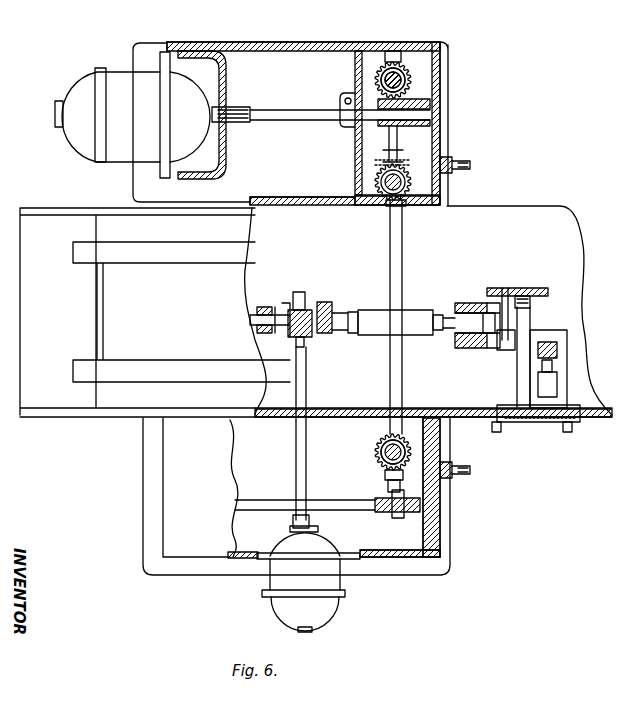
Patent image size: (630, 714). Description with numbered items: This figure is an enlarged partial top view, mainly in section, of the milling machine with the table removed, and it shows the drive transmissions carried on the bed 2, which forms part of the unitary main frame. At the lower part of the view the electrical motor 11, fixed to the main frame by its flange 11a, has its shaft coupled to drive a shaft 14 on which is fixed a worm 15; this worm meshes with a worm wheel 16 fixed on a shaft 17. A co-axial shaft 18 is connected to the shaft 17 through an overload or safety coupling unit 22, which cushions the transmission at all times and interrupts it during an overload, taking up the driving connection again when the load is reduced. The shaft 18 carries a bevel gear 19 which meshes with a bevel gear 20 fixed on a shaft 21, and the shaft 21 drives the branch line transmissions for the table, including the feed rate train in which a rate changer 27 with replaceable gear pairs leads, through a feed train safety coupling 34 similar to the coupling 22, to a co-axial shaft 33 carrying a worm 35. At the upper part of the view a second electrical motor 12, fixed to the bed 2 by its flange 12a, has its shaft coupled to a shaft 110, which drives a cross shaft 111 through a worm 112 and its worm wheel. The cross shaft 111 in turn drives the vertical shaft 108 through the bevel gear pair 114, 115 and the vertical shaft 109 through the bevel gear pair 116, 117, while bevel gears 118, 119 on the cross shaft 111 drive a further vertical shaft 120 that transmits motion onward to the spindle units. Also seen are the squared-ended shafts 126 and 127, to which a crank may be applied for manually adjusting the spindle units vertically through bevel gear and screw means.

The bed 2 is at (512, 232).
The motor 11 is at (320, 583).
The flange 11a is at (255, 562).
The motor 12 is at (70, 135).
The flange 12a is at (163, 175).
The shaft 14 is at (298, 408).
The worm 15 is at (308, 328).
The worm wheel 16 is at (306, 302).
The shaft 17 is at (266, 305).
The co-axial shaft 18 is at (460, 320).
The bevel gear 19 is at (486, 335).
The bevel gear 20 is at (505, 348).
The shaft 21 is at (500, 288).
The overload or safety coupling unit 22 is at (372, 310).
The rate changer 27 is at (556, 430).
The co-axial shaft 33 is at (552, 369).
The feed train safety coupling 34 is at (557, 386).
The worm 35 is at (557, 352).
The vertical shaft 108 is at (407, 206).
The vertical shaft 109 is at (378, 447).
The shaft 110 is at (316, 114).
The cross shaft 111 is at (390, 235).
The worm 112 is at (420, 99).
The bevel gear 114 is at (378, 160).
The bevel gear 115 is at (378, 182).
The bevel gear 116 is at (385, 479).
The bevel gear 117 is at (380, 462).
The bevel gear 118 is at (408, 62).
The bevel gear 119 is at (415, 88).
The vertical shaft 120 is at (410, 74).
The shaft 126 is at (457, 472).
The shaft 127 is at (455, 165).